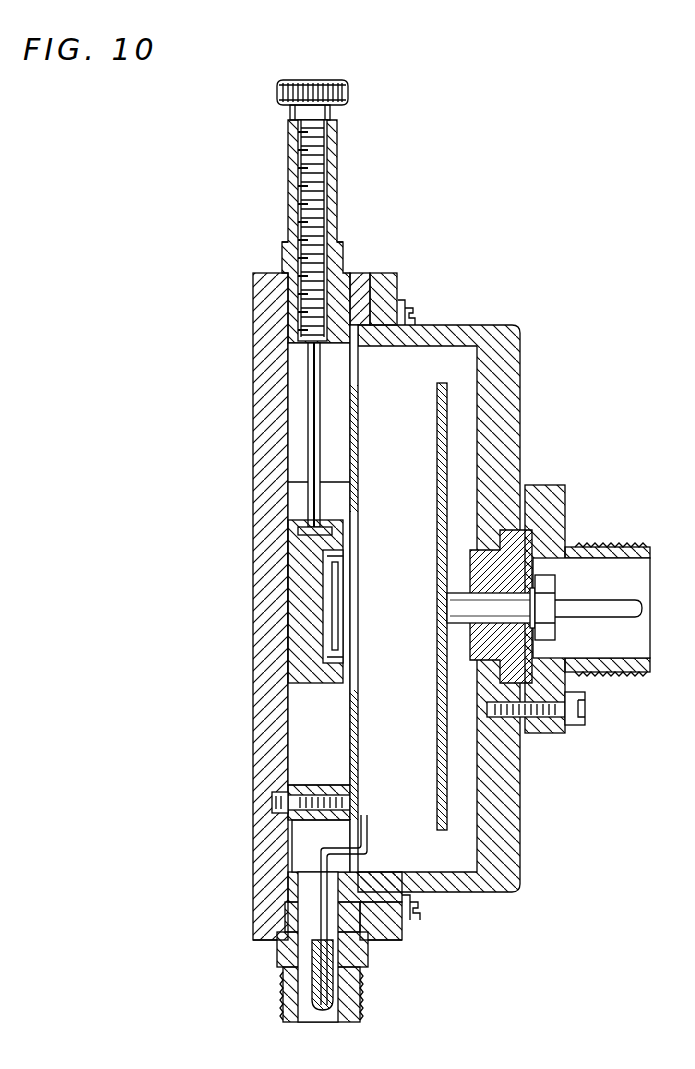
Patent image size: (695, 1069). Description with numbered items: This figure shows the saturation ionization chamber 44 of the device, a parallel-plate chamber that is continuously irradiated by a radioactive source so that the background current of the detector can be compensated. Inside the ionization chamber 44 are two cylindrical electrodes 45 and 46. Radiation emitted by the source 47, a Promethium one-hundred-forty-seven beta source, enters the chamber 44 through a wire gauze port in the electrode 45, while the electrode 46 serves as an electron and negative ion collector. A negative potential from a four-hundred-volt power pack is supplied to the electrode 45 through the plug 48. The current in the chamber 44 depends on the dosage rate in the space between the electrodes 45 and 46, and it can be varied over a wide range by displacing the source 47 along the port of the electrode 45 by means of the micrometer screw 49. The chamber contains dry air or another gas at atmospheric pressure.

The saturation ionization chamber 44 is at (447, 359).
The electrode 45 is at (358, 440).
The electrode 46 is at (438, 795).
The source 47 is at (330, 606).
The plug 48 is at (325, 968).
The micrometer screw 49 is at (308, 420).